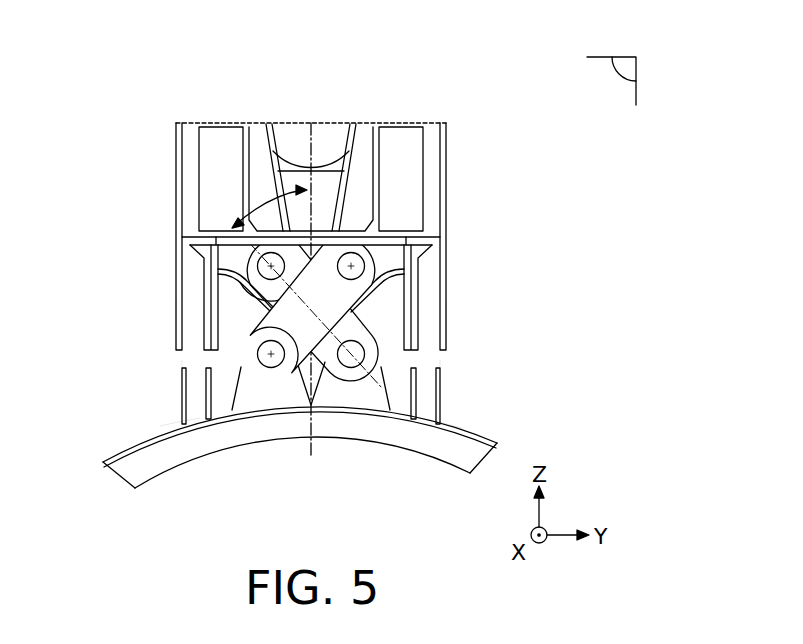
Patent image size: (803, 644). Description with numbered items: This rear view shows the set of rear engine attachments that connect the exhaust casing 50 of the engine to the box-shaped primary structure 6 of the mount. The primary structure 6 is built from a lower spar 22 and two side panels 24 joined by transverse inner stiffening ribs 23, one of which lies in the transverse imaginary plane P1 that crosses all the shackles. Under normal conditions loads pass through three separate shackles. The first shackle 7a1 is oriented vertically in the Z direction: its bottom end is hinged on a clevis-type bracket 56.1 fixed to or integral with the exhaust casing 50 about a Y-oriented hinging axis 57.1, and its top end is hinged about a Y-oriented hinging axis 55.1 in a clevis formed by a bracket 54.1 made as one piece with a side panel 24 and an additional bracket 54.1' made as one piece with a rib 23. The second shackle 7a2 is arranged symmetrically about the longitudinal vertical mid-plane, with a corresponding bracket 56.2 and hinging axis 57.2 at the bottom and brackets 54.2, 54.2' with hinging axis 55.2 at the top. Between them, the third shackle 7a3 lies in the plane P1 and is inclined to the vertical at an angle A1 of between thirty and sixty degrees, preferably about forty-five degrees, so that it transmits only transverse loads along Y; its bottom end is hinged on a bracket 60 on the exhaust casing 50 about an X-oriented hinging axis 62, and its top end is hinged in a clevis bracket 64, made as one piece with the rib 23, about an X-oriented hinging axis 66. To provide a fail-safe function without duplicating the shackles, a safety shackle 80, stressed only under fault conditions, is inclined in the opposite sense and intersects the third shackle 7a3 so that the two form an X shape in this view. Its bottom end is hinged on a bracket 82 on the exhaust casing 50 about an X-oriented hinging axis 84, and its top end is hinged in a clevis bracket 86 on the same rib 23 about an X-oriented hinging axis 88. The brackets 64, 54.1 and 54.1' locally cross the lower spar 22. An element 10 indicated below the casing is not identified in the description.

The primary structure 6 is at (403, 124).
The conveyor belt / support structure 10 is at (153, 487).
The lower spar 22 is at (240, 235).
The transverse inner stiffening ribs 23 is at (412, 149).
The side panels 24 is at (184, 188).
The exhaust casing 50 is at (103, 462).
The bracket 54.1 is at (123, 297).
The bracket 54.2 is at (496, 297).
The additional bracket 54.1' is at (179, 275).
The additional bracket 54.2' is at (443, 264).
The hinging axis 55.1 is at (180, 322).
The hinging axis 55.2 is at (442, 322).
The bracket 56.1 is at (168, 430).
The bracket 56.2 is at (447, 427).
The hinging axis 57.1 is at (216, 395).
The hinging axis 57.2 is at (406, 395).
The bracket 60 is at (357, 400).
The hinging axis 62 is at (345, 368).
The bracket 64 is at (216, 240).
The hinging axis 66 is at (270, 252).
The safety shackle 80 is at (256, 327).
The bracket 82 is at (265, 398).
The hinging axis 84 is at (272, 357).
The bracket 86 is at (395, 246).
The hinging axis 88 is at (339, 256).
The first shackle 7a1 is at (178, 380).
The second shackle 7a2 is at (446, 380).
The third shackle 7a3 is at (362, 327).
The angle A1 is at (296, 212).
The transverse imaginary plane P1 is at (630, 67).